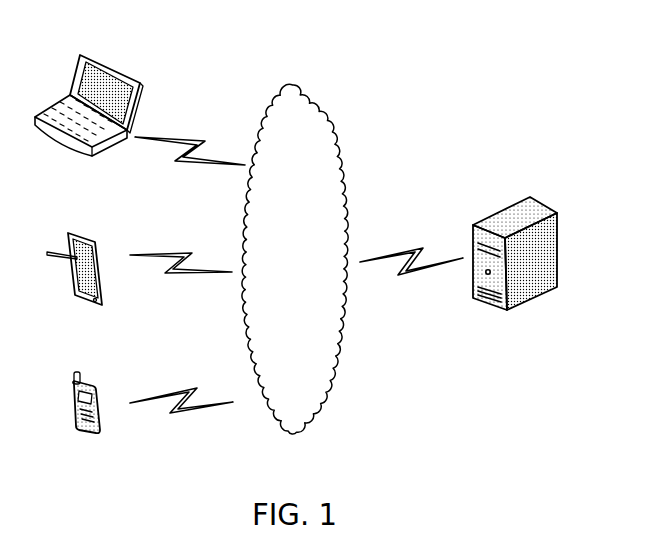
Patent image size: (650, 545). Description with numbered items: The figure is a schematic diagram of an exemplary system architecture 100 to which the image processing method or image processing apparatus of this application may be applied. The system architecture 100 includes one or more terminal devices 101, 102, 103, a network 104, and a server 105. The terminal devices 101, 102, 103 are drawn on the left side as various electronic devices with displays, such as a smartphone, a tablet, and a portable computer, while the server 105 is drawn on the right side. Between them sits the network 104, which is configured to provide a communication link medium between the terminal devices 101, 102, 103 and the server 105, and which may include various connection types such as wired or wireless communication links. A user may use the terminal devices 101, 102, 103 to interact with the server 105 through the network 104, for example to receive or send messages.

The system architecture 100 is at (527, 52).
The terminal device 101 is at (88, 418).
The terminal device 102 is at (75, 284).
The terminal device 103 is at (89, 121).
The network 104 is at (295, 259).
The server 105 is at (515, 271).